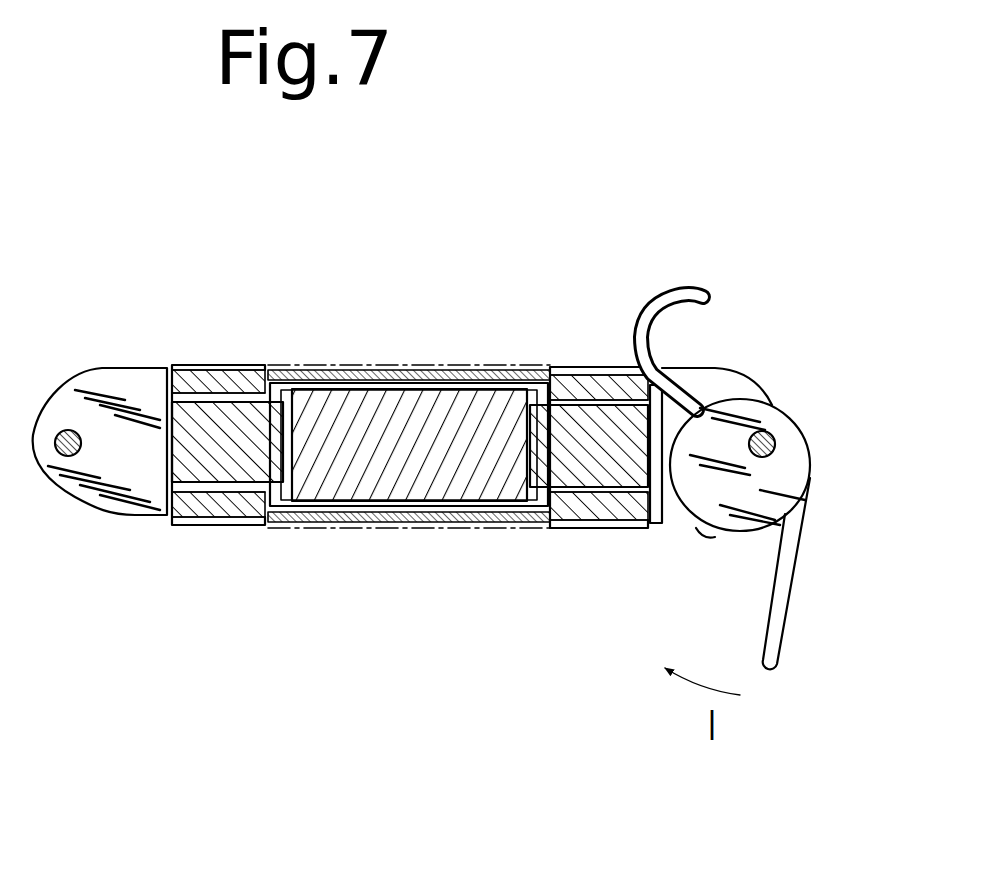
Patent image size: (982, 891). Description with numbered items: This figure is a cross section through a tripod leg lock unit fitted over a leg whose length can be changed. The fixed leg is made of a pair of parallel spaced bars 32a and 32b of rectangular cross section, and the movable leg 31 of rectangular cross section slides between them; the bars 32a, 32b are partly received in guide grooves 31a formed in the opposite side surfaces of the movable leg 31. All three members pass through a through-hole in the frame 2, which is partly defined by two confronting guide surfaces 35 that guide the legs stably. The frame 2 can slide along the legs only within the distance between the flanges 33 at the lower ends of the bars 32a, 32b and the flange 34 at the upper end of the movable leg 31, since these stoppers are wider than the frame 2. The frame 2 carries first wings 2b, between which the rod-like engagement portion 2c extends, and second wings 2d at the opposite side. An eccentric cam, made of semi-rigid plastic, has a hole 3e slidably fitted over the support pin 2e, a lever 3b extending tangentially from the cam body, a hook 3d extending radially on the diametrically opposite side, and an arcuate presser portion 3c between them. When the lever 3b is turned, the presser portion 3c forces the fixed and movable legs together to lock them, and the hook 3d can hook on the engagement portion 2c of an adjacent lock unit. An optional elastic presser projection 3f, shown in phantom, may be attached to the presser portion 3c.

The frame 2 is at (402, 362).
The first wings 2b is at (122, 512).
The engagement portion 2c is at (66, 457).
The second wings 2d is at (700, 372).
The support pin 2e is at (770, 455).
The lever 3b is at (777, 668).
The presser portion 3c is at (688, 507).
The hook 3d is at (683, 290).
The hole 3e is at (761, 432).
The presser projection 3f is at (672, 490).
The movable leg 31 is at (430, 502).
The guide grooves 31a is at (297, 475).
The bar 32a is at (242, 412).
The bar 32b is at (592, 415).
The flange 33 is at (195, 365).
The flange 34 is at (362, 365).
The guide surfaces 35 is at (455, 388).